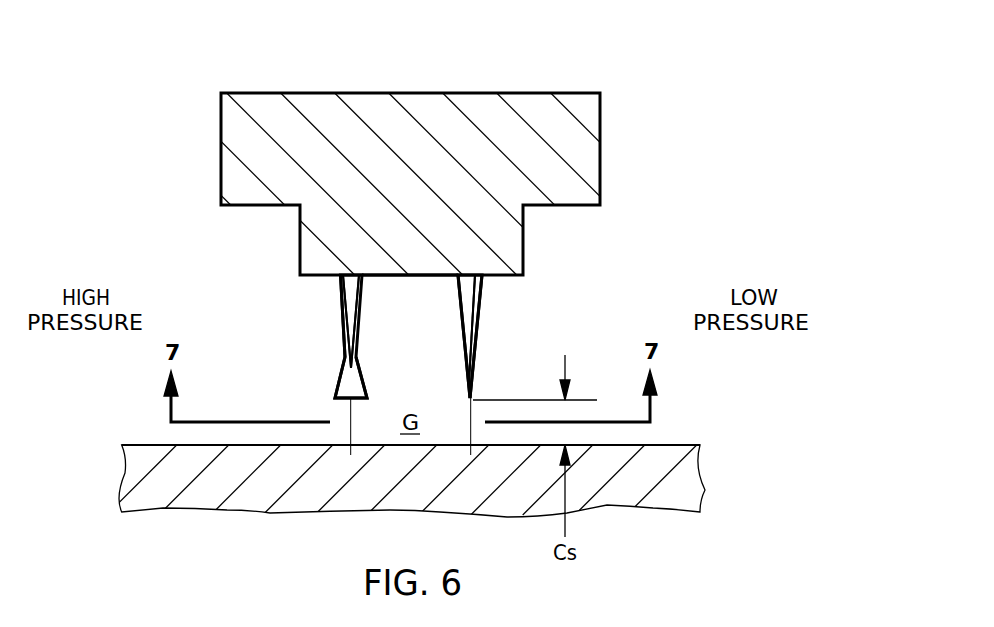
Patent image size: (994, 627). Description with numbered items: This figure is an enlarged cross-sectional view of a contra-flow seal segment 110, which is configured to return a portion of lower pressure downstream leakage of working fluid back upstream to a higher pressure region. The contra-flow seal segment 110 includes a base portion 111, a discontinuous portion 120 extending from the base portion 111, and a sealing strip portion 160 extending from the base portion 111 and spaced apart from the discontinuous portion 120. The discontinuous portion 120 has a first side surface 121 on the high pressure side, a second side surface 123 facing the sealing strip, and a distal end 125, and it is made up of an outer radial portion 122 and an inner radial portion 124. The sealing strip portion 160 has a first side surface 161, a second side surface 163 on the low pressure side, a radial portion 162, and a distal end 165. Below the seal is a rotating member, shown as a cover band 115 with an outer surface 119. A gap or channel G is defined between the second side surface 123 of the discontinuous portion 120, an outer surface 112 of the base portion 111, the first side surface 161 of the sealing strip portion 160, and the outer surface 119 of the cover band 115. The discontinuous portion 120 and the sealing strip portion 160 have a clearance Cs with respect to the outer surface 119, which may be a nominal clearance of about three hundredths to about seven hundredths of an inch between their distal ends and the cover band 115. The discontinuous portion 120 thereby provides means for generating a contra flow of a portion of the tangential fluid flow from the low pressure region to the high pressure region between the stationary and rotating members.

The contra-flow seal segment 110 is at (198, 52).
The base portion 111 is at (593, 158).
The outer surface of base portion 112 is at (427, 278).
The cover band 115 is at (673, 507).
The outer surface of cover band 119 is at (682, 443).
The discontinuous portion 120 is at (294, 305).
The first side surface of discontinuous portion 121 is at (347, 323).
The outer radial portion 122 is at (326, 288).
The second side surface of discontinuous portion 123 is at (358, 323).
The inner radial portion 124 is at (320, 390).
The distal end of discontinuous portion 125 is at (350, 400).
The sealing strip portion 160 is at (513, 318).
The first side surface of sealing strip portion 161 is at (465, 367).
The radial portion of sealing strip portion 162 is at (497, 295).
The second side surface of sealing strip portion 163 is at (475, 360).
The distal end of sealing strip portion 165 is at (470, 400).